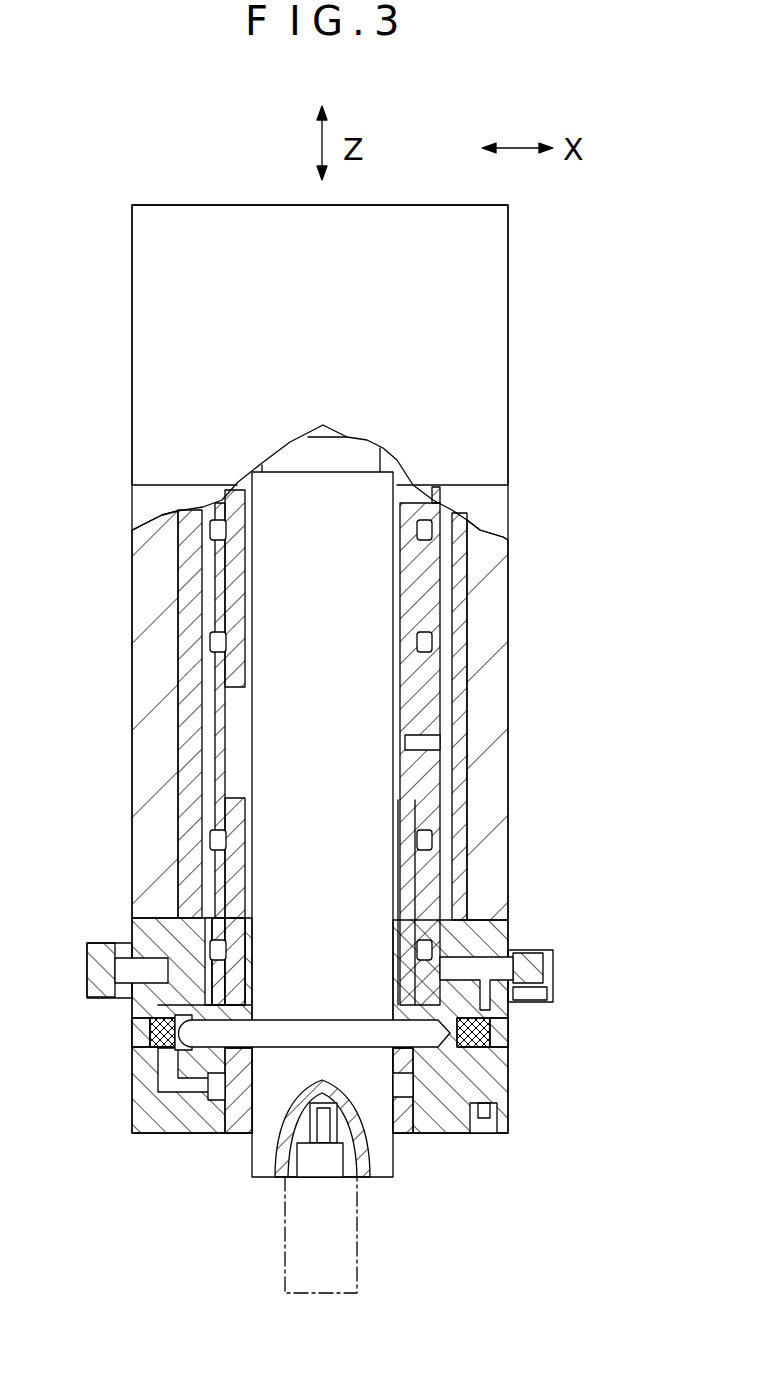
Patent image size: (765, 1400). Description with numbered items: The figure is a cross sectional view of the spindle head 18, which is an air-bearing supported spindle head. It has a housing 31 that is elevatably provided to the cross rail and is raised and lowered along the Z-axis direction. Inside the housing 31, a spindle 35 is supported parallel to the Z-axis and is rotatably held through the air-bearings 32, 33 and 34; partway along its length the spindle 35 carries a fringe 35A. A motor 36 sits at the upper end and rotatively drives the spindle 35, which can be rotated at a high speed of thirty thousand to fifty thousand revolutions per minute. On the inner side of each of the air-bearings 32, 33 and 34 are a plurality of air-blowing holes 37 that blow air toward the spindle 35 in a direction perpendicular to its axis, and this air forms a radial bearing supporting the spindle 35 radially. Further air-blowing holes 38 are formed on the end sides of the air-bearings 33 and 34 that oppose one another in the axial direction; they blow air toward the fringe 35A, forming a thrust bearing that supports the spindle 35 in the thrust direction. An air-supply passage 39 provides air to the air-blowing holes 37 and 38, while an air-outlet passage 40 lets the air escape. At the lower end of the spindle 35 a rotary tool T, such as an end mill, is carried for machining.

The spindle head 18 is at (140, 340).
The motor 36 is at (497, 345).
The housing 31 is at (502, 762).
The air-bearing 32 is at (407, 613).
The air-bearing 33 is at (440, 870).
The air-blowing holes 37 is at (417, 530).
The air-supply passage 39 is at (205, 756).
The air-outlet passage 40 is at (447, 788).
The air-bearing 34 is at (463, 1073).
The spindle 35 is at (265, 1152).
The fringe 35A is at (323, 1025).
The air-blowing holes 38 is at (177, 1026).
The rotary tool T is at (358, 1240).